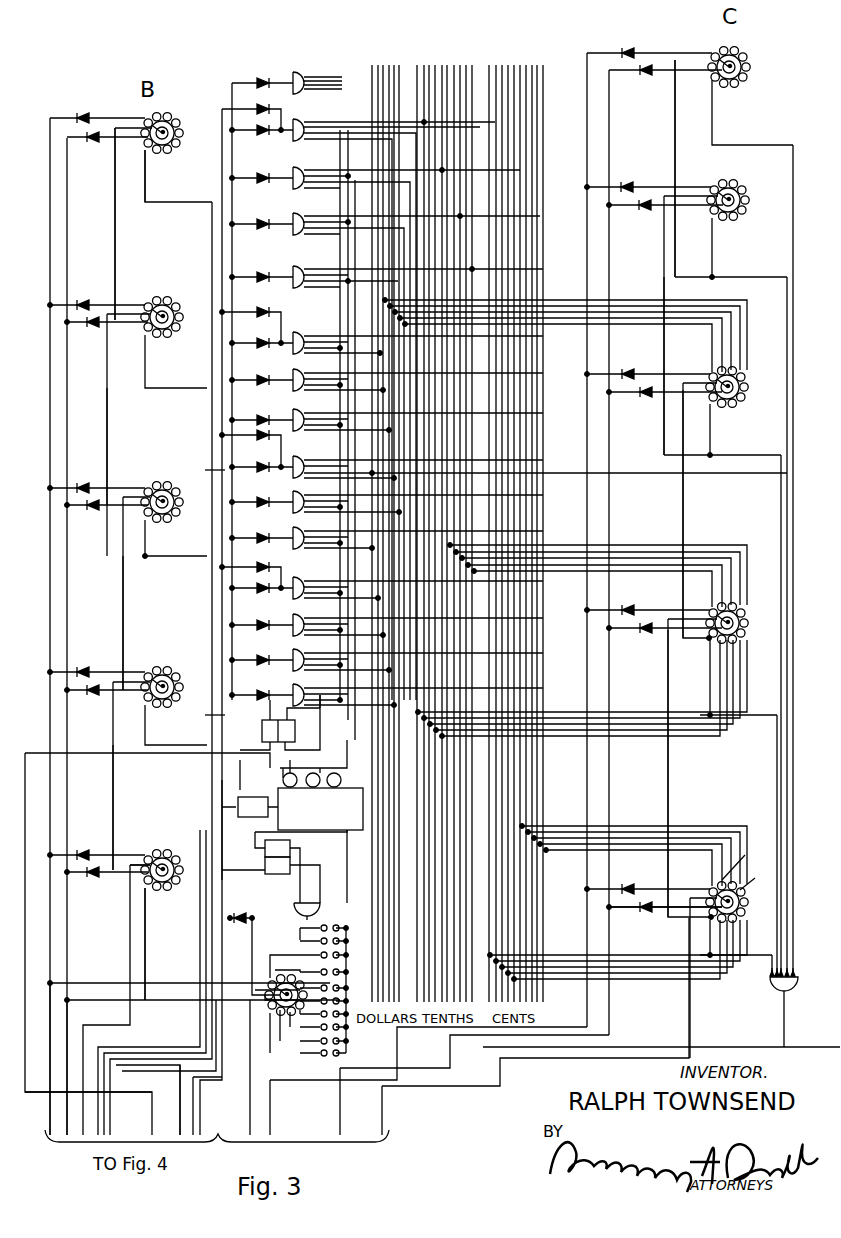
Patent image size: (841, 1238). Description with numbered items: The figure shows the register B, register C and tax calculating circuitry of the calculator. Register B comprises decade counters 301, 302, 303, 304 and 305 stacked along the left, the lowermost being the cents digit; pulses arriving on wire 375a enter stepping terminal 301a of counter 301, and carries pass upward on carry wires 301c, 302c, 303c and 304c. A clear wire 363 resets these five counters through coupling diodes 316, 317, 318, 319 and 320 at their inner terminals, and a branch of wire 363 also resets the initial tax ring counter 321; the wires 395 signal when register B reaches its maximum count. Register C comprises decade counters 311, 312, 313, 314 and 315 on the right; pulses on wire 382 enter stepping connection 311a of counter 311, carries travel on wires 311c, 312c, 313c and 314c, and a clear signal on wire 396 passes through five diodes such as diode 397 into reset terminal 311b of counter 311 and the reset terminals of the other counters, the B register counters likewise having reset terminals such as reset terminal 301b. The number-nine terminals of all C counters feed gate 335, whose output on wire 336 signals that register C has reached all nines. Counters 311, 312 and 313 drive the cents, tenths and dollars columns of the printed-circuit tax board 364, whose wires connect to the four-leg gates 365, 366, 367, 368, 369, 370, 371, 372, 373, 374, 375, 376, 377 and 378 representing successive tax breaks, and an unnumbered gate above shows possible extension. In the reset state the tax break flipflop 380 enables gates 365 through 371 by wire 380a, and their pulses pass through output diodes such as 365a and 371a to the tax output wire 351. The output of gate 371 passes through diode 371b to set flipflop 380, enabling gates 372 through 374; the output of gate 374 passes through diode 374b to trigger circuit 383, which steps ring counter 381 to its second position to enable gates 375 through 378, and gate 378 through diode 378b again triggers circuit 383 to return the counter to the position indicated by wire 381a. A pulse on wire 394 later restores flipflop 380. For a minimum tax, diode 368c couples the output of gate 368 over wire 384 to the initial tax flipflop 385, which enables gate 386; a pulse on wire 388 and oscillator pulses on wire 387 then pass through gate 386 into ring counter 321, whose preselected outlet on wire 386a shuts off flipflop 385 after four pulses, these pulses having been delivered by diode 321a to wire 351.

The printed-circuit tax calculating board 364 is at (545, 62).
The diode 378b is at (250, 108).
The gate 378 is at (297, 145).
The gate 377 is at (297, 192).
The gate 376 is at (297, 238).
The gate 375 is at (297, 290).
The diode 374b is at (245, 304).
The gate 374 is at (297, 340).
The gate 373 is at (297, 377).
The gate 372 is at (297, 416).
The diode 371b is at (222, 436).
The output diode 371a is at (215, 473).
The gate 371 is at (297, 462).
The gate 370 is at (302, 521).
The gate 369 is at (302, 556).
The diode 368c is at (220, 567).
The gate 368 is at (302, 606).
The gate 367 is at (302, 642).
The gate 366 is at (302, 676).
The output diode 365a is at (208, 708).
The gate 365 is at (305, 706).
The wire 351 is at (206, 622).
The wire 380a is at (312, 712).
The tax break flipflop 380 is at (289, 747).
The wire 381a is at (241, 770).
The ring counter 381 is at (325, 785).
The trigger circuit 383 is at (250, 798).
The wire 384 is at (200, 840).
The initial tax flipflop 385 is at (272, 885).
The wire 386a is at (350, 1048).
The gate 386 is at (308, 906).
The diode 321a is at (260, 907).
The initial tax ring counter 321 is at (273, 1004).
The wire 363 is at (120, 1008).
The wires 395 is at (210, 1020).
The wire 375a is at (120, 980).
The wire 394 is at (148, 1090).
The wire 387 is at (178, 1104).
The wire 388 is at (196, 1082).
The wire 382 is at (375, 1090).
The wire 396 is at (253, 1088).
The wire 336 is at (386, 1089).
The coupling diode 320 is at (99, 143).
The decade counter 305 is at (162, 157).
The carry wire 304c is at (113, 255).
The decade counter 304 is at (157, 401).
The coupling diode 319 is at (99, 328).
The carry wire 303c is at (104, 425).
The coupling diode 318 is at (99, 511).
The decade counter 303 is at (157, 586).
The carry wire 302c is at (107, 620).
The coupling diode 317 is at (99, 693).
The decade counter 302 is at (160, 768).
The carry wire 301c is at (124, 805).
The stepping terminal 301a is at (132, 854).
The decade counter 301 is at (145, 992).
The coupling diode 316 is at (99, 881).
The reset terminal 301b is at (130, 932).
The decade counter 315 is at (690, 162).
The carry signal wire 314c is at (656, 139).
The decade counter 314 is at (678, 317).
The carry signal wire 313c is at (652, 284).
The decade counter 313 is at (683, 502).
The carry signal wire 312c is at (684, 524).
The decade counter 312 is at (681, 760).
The carry signal wire 311c is at (669, 784).
The stepping connection 311a is at (755, 860).
The reset terminal 311b is at (764, 879).
The decade counter 311 is at (682, 970).
The diode 397 is at (652, 910).
The gate 335 is at (772, 989).